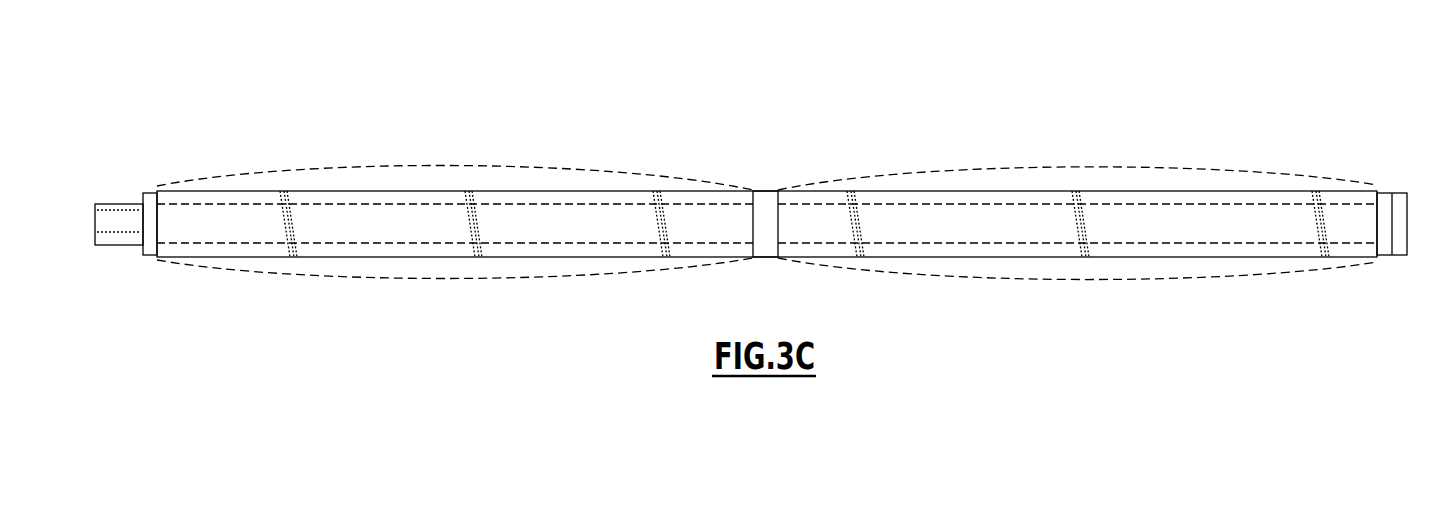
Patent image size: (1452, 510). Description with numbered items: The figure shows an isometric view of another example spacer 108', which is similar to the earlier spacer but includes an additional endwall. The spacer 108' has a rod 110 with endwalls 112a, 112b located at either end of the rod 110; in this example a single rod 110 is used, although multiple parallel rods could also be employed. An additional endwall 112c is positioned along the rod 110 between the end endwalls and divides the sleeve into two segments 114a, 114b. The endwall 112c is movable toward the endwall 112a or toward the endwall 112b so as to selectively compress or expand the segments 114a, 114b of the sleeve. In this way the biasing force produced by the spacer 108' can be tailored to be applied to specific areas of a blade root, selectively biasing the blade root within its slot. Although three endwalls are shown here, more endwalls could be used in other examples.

The spacer 108' is at (766, 159).
The rod 110 is at (343, 213).
The endwall 112a is at (149, 193).
The endwall 112b is at (1389, 193).
The additional endwall 112c is at (767, 191).
The sleeve segment 114a is at (492, 197).
The sleeve segment 114b is at (1018, 197).